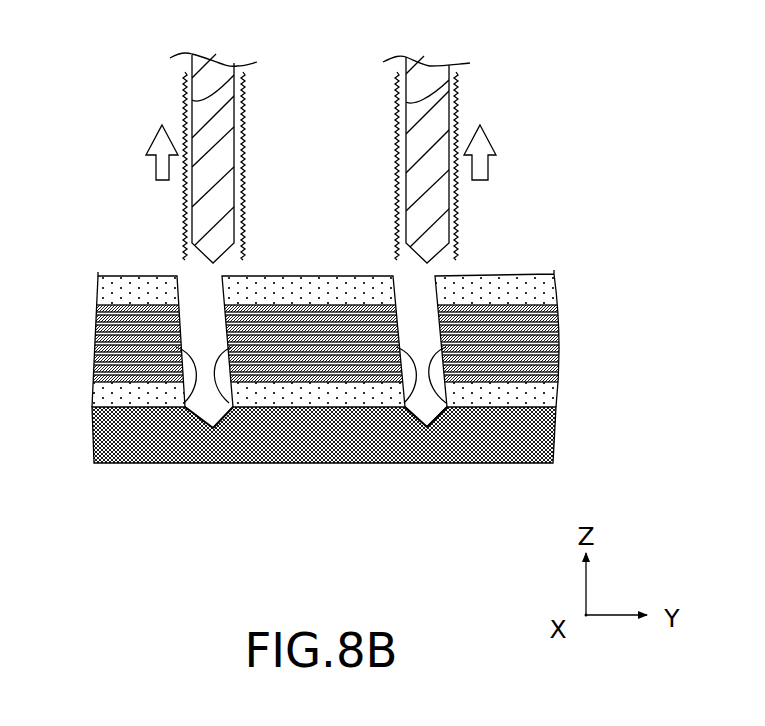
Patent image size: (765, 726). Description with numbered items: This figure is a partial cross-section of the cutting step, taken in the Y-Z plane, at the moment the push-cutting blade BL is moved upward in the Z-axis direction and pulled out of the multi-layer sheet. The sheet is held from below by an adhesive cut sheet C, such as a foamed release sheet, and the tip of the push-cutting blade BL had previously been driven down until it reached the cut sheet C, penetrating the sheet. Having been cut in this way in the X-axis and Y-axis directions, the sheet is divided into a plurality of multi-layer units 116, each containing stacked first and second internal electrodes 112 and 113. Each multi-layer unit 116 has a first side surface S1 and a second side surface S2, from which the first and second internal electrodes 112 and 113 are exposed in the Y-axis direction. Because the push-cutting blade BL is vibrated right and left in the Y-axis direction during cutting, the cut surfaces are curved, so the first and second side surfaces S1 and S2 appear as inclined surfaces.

The push-cutting blade BL is at (210, 147).
The multi-layer unit 116 is at (322, 280).
The first internal electrode 112 is at (257, 372).
The second internal electrode 113 is at (340, 380).
The cut sheet C is at (530, 438).
The first side surface S1 is at (270, 463).
The second side surface S2 is at (140, 463).